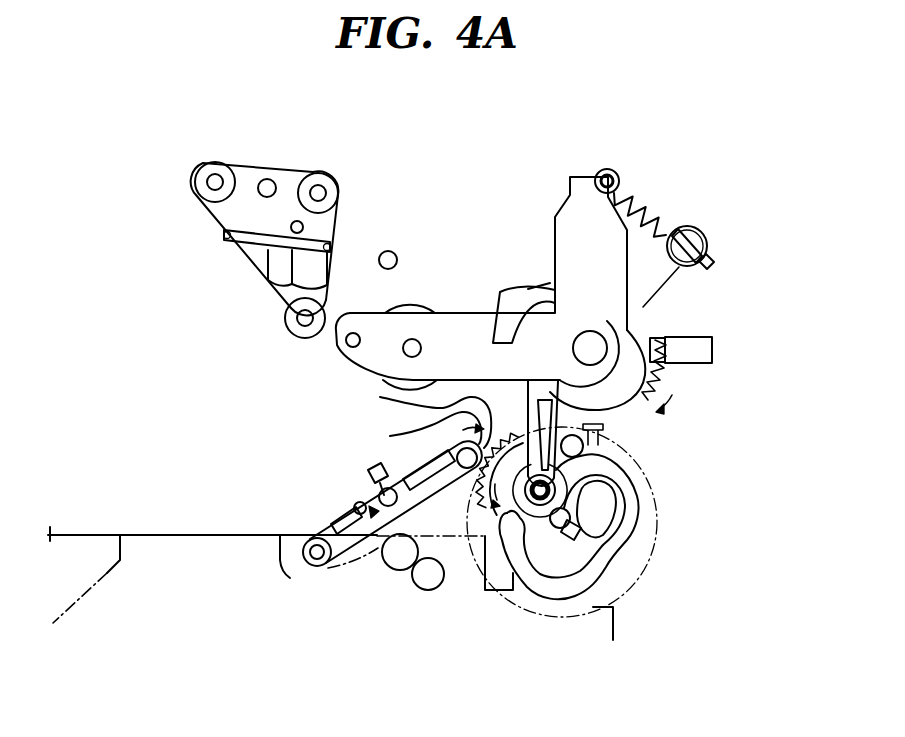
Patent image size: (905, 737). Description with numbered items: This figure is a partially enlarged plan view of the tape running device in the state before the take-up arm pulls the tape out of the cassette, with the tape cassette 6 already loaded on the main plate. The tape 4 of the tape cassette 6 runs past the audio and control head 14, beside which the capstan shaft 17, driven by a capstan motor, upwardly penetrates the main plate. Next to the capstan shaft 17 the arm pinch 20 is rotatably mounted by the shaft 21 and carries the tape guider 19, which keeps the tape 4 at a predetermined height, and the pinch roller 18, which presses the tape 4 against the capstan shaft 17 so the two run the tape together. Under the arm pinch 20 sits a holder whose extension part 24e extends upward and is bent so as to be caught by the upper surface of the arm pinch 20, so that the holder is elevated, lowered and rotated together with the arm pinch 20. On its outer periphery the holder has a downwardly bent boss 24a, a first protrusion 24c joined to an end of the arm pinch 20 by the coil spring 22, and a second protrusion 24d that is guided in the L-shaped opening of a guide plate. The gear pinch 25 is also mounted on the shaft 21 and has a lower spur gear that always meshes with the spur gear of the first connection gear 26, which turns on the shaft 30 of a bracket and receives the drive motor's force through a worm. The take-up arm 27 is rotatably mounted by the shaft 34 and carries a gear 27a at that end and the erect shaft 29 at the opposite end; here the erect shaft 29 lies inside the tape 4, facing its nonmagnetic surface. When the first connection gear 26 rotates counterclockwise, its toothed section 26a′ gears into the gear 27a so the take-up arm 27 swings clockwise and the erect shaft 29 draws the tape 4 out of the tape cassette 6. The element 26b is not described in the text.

The tape 4 is at (97, 533).
The tape cassette 6 is at (615, 618).
The audio and control head 14 is at (262, 266).
The capstan shaft 17 is at (388, 251).
The pinch roller 18 is at (410, 305).
The tape guider 19 is at (346, 341).
The arm pinch 20 is at (608, 296).
The shaft 21 is at (590, 347).
The coil spring 22 is at (645, 216).
The boss 24a is at (605, 452).
The first protrusion 24c is at (673, 283).
The second protrusion 24d is at (712, 350).
The extension part 24e is at (497, 290).
The gear pinch 25 is at (679, 386).
The first connection gear 26 is at (640, 555).
The toothed section 26a′ is at (380, 397).
The cam pivot link 26b is at (645, 497).
The take-up arm 27 is at (360, 480).
The gear 27a is at (390, 436).
The erect shaft 29 is at (311, 572).
The shaft 30 is at (652, 532).
The shaft 34 is at (407, 570).